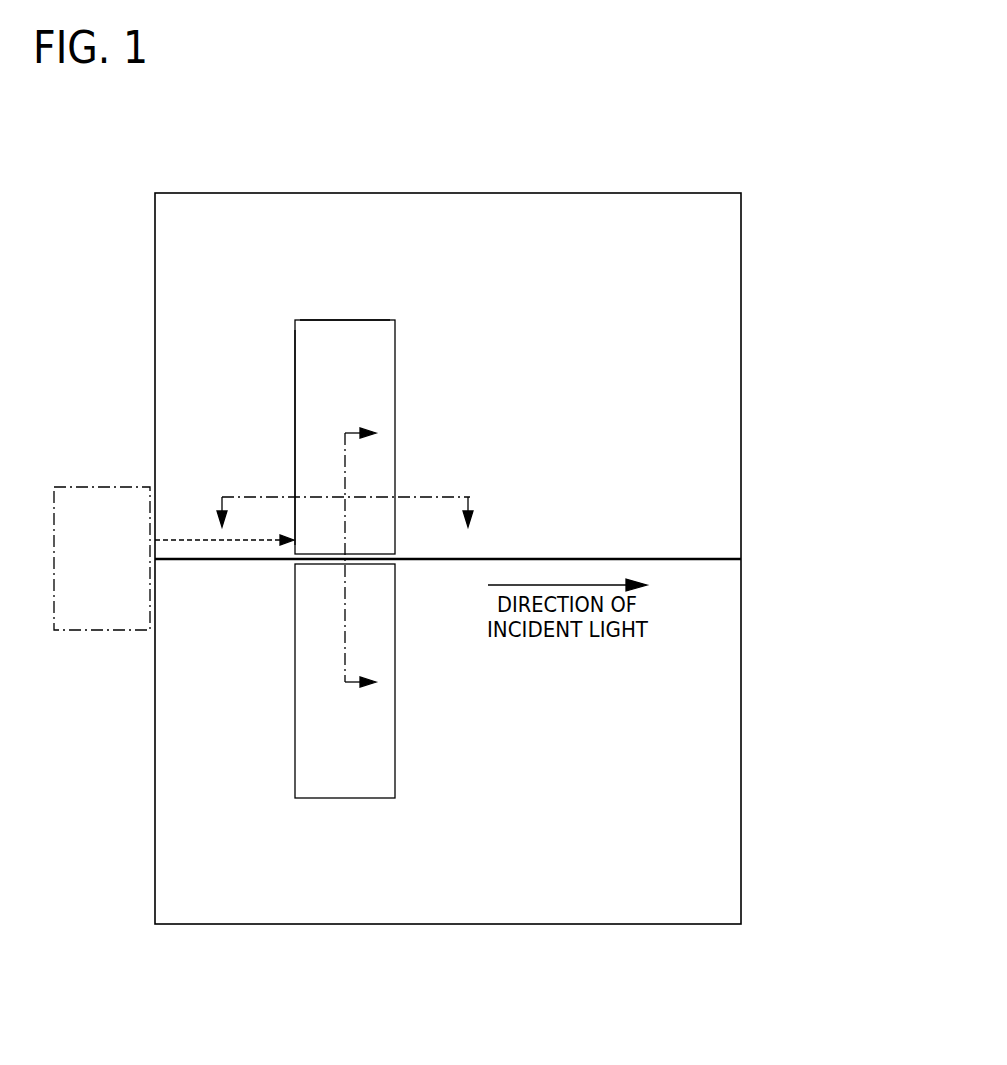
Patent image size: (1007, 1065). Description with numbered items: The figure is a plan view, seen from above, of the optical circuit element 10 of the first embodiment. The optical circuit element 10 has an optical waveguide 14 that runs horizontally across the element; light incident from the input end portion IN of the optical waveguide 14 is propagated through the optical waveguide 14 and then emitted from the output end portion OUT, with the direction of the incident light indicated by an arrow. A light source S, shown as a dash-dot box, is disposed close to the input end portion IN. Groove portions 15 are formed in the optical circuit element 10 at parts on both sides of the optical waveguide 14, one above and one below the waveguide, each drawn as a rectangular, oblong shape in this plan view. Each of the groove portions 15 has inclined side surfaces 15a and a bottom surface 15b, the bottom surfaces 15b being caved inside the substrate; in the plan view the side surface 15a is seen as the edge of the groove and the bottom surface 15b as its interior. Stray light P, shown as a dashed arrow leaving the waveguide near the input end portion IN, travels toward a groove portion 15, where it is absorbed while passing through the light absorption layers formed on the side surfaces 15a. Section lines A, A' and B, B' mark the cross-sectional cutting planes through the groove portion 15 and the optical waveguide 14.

The optical circuit element 10 is at (641, 168).
The optical waveguide 14 is at (589, 557).
The groove portions 15 is at (396, 378).
The side surfaces 15a is at (295, 366).
The bottom surfaces 15b is at (345, 340).
The light source S is at (93, 486).
The stray light P is at (181, 537).
The input end portion IN is at (155, 580).
The output end portion OUT is at (741, 543).
The section line A is at (341, 496).
The section line A' is at (467, 496).
The section line B is at (350, 551).
The section line B' is at (347, 683).